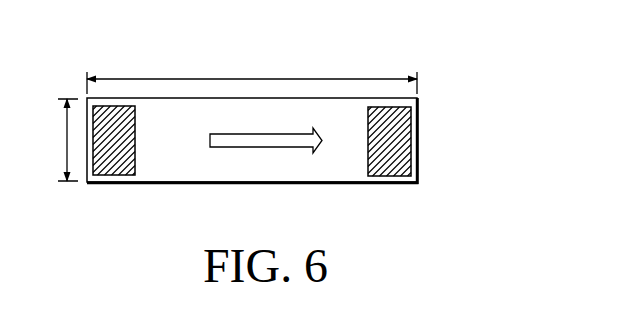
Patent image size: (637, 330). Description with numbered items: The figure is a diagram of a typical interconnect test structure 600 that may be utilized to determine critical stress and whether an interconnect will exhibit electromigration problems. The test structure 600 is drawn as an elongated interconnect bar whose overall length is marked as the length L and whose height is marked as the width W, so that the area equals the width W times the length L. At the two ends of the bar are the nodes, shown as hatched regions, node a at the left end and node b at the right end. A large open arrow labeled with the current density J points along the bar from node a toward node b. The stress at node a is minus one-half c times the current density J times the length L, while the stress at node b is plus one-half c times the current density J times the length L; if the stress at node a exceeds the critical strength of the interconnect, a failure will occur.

The test structure 600 is at (275, 114).
The node a is at (115, 165).
The node b is at (393, 163).
The current density J is at (257, 141).
The length L is at (252, 72).
The width W is at (57, 140).